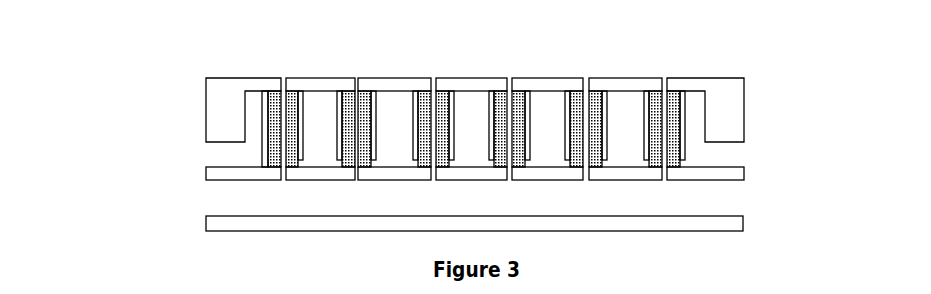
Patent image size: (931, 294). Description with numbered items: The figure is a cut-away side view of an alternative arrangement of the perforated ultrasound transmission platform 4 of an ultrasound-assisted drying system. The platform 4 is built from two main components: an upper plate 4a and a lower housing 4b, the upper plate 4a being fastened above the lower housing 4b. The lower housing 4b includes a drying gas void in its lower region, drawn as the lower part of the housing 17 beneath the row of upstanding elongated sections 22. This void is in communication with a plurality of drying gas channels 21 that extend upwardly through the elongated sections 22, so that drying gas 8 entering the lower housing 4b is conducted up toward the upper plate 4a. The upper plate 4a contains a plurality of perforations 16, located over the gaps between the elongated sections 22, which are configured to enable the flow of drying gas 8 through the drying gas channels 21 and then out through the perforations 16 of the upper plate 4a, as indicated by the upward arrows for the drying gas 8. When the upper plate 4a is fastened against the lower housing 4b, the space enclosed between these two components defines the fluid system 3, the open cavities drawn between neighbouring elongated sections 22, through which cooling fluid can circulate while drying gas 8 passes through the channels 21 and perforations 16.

The perforated ultrasound transmission platform 4 is at (134, 61).
The upper plate 4a is at (727, 84).
The lower housing 4b is at (756, 157).
The fluid system 3 is at (475, 134).
The drying gas 8 is at (284, 75).
The perforations 16 is at (658, 72).
The base plate 17 is at (474, 207).
The drying gas channels 21 is at (508, 122).
The elongated sections 22 is at (575, 123).